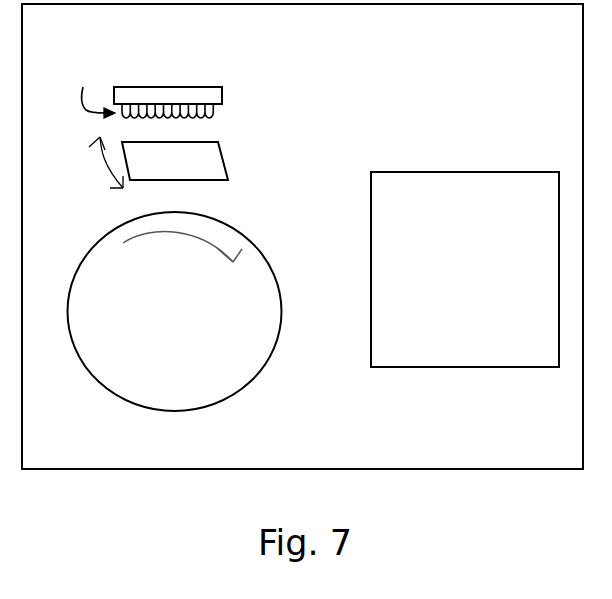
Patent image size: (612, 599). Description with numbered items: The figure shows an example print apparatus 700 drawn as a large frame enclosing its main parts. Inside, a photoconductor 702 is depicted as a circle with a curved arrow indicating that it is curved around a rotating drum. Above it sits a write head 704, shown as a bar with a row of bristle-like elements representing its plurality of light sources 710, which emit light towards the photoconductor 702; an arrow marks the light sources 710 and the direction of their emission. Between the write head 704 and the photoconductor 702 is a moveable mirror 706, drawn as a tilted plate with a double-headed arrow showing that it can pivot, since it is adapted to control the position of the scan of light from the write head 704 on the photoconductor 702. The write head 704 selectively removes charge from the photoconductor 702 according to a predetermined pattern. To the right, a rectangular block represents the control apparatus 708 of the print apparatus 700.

The print apparatus 700 is at (320, 38).
The photoconductor 702 is at (209, 408).
The write head 704 is at (157, 87).
The moveable mirror 706 is at (155, 174).
The control apparatus 708 is at (444, 254).
The light sources 710 is at (89, 90).